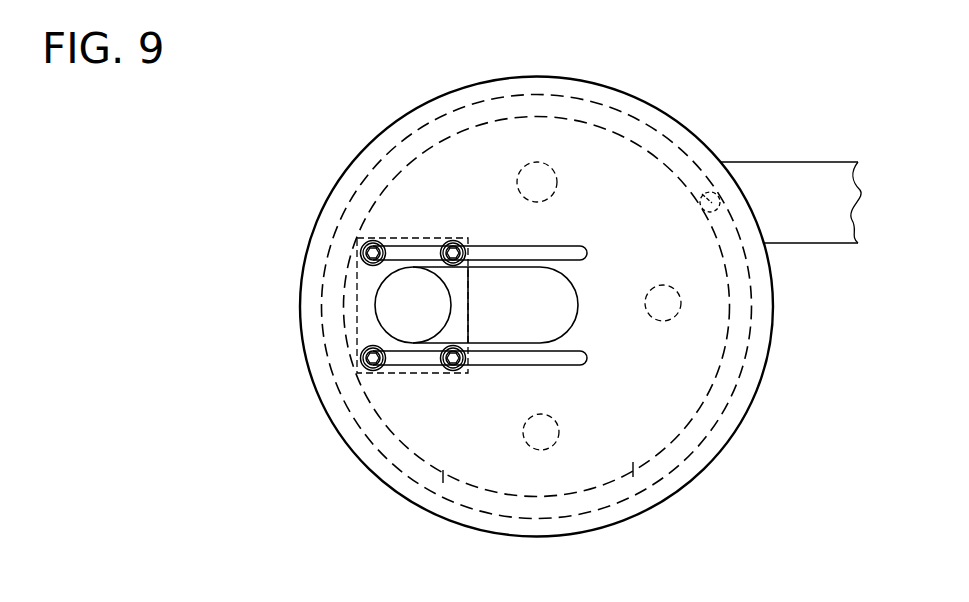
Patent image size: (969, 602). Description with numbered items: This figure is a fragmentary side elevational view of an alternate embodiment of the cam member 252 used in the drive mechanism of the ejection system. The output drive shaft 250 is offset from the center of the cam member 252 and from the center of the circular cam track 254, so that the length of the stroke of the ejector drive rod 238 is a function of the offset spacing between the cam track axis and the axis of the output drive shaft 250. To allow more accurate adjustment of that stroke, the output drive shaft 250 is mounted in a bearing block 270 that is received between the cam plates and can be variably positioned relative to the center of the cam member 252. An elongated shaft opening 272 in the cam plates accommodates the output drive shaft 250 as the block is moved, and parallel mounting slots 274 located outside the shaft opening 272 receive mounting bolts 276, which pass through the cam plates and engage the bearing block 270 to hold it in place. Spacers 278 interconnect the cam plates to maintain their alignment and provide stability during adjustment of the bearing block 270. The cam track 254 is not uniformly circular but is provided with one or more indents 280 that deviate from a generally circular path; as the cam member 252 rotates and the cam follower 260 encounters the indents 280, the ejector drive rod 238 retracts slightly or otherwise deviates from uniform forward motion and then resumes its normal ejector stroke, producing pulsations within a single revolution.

The ejector drive rod 238 is at (763, 173).
The output drive shaft 250 is at (397, 302).
The cam member 252 is at (247, 183).
The circular cam track 254 is at (590, 108).
The cam follower 260 is at (708, 200).
The bearing block 270 is at (462, 320).
The elongated shaft opening 272 is at (573, 284).
The mounting slots 274 is at (534, 256).
The mounting bolts 276 is at (373, 242).
The spacers 278 is at (540, 182).
The indents 280 is at (443, 478).